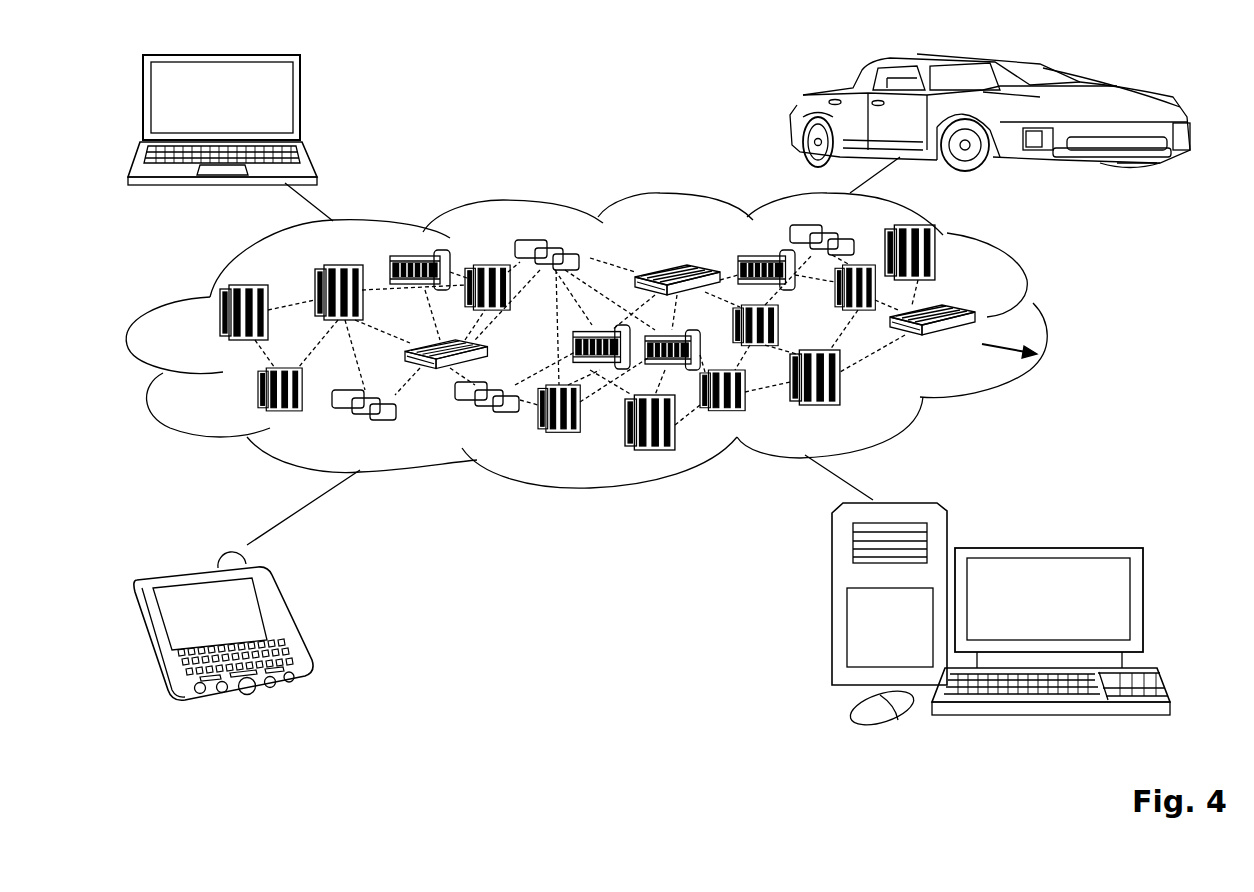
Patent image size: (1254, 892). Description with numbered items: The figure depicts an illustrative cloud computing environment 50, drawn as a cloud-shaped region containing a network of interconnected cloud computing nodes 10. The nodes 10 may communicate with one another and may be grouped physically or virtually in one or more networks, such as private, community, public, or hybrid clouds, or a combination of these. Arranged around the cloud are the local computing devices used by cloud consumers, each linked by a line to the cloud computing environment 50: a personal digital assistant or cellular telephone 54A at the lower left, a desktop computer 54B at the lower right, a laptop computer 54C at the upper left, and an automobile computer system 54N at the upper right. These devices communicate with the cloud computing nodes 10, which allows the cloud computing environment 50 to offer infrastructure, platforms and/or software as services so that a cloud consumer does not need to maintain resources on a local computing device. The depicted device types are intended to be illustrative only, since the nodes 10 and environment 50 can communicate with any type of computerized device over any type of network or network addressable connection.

The cloud computing node 10 is at (1010, 357).
The cloud computing environment 50 is at (1047, 318).
The personal digital assistant (PDA) or cellular telephone 54A is at (288, 621).
The desktop computer 54B is at (1045, 547).
The laptop computer 54C is at (300, 103).
The automobile computer system 54N is at (794, 118).